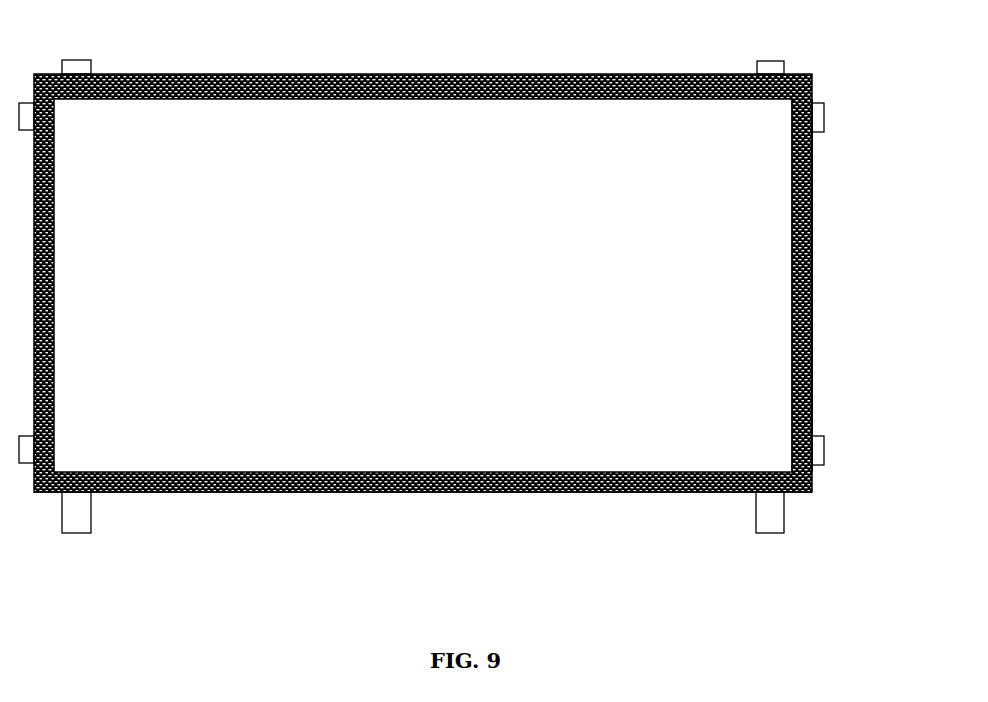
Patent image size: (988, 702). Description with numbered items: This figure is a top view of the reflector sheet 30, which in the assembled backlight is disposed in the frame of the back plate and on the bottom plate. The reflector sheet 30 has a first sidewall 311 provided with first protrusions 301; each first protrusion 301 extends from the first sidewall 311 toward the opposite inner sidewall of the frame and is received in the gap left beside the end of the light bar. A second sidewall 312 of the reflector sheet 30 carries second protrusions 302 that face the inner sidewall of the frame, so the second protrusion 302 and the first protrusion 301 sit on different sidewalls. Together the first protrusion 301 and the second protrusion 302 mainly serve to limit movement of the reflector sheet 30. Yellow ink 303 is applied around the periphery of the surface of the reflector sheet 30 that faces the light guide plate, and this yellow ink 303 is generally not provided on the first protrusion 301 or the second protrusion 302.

The reflector sheet 30 is at (47, 44).
The first protrusion 301 is at (82, 505).
The second protrusion 302 is at (819, 112).
The yellow ink 303 is at (807, 287).
The first sidewall 311 is at (410, 492).
The second sidewall 312 is at (812, 217).